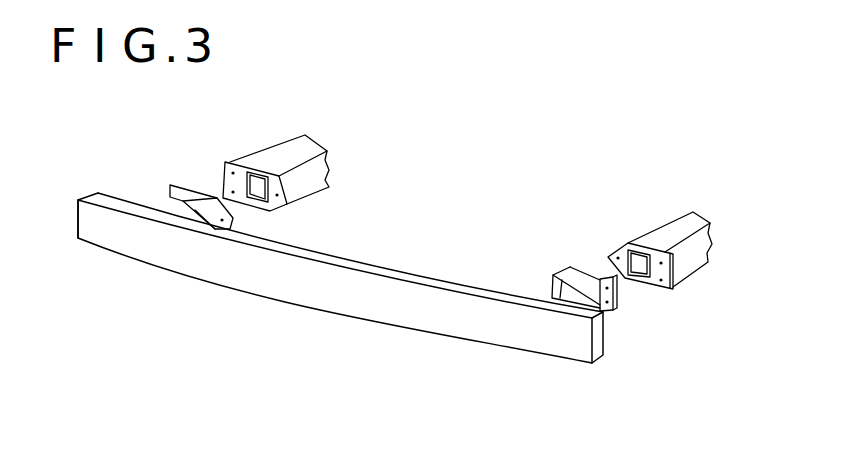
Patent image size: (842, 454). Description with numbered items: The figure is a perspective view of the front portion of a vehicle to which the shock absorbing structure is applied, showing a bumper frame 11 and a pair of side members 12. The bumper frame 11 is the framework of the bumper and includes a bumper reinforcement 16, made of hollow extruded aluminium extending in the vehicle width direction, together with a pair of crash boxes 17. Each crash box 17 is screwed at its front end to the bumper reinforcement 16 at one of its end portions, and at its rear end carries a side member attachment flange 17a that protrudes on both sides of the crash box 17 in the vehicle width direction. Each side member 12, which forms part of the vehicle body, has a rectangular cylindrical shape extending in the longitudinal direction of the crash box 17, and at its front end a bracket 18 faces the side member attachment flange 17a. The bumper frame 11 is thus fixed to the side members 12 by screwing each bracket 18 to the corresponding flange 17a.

The bumper frame 11 is at (340, 278).
The side member 12 is at (267, 161).
The bumper reinforcement 16 is at (387, 297).
The crash box 17 is at (160, 210).
The side member attachment flange 17a is at (617, 297).
The bracket 18 is at (223, 168).